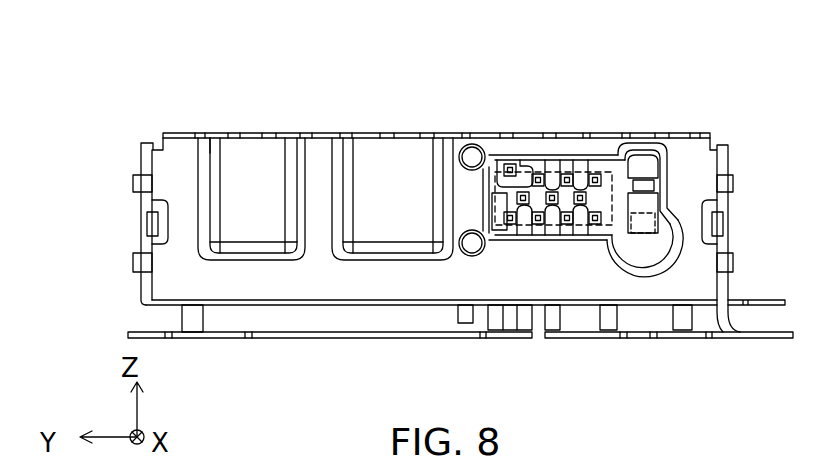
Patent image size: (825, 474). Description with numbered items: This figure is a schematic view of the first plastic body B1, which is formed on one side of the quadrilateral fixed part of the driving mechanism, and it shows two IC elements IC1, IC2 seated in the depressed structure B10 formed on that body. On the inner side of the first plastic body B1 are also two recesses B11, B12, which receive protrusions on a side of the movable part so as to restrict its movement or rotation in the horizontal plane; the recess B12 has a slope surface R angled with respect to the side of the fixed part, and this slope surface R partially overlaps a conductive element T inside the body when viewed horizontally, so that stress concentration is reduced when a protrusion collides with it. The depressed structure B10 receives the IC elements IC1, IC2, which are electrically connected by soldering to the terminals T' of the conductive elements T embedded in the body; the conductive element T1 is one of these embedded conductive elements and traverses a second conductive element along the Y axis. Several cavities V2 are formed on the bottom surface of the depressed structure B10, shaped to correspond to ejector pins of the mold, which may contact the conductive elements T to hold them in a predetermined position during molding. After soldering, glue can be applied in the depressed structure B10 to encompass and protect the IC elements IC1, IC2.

The first plastic body B1 is at (165, 133).
The slope surface R is at (213, 153).
The recess B12 is at (269, 153).
The recess B11 is at (394, 153).
The terminal T' is at (566, 235).
The IC element IC1 is at (600, 165).
The conductive element T1 is at (642, 155).
The IC element IC2 is at (665, 177).
The cavity V2 is at (653, 181).
The depressed structure B10 is at (662, 240).
The conductive element T is at (524, 359).